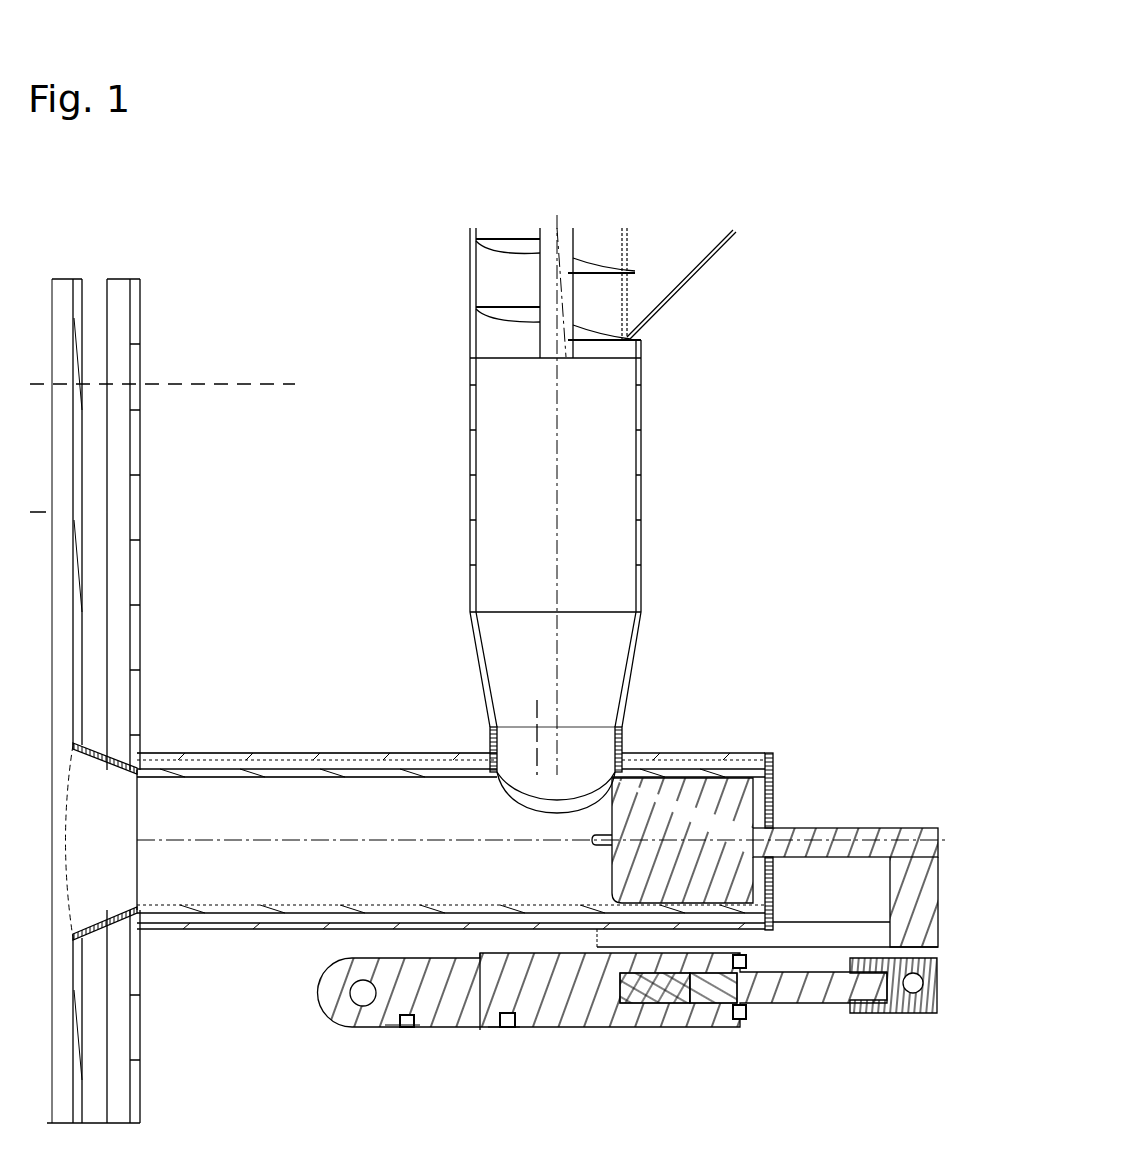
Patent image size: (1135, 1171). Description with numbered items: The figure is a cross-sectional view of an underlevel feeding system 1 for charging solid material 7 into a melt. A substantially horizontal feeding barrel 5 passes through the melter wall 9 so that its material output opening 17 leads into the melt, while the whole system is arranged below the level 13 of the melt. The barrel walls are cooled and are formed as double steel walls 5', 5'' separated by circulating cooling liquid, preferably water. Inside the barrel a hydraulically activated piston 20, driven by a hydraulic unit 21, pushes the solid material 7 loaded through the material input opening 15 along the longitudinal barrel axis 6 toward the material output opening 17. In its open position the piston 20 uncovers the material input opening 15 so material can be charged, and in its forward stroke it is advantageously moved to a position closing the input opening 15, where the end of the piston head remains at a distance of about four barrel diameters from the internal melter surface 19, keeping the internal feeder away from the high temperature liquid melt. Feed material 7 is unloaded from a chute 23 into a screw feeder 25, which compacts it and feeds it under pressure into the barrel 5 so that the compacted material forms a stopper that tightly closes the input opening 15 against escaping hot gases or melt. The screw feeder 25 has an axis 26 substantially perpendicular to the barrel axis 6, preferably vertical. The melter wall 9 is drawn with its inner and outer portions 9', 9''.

The feeding system 1 is at (718, 683).
The feeding barrel 5 is at (537, 806).
The steel wall 5' is at (317, 693).
The steel wall 5'' is at (317, 806).
The longitudinal barrel axis 6 is at (322, 842).
The solid material 7 is at (627, 337).
The melter wall 9 is at (85, 669).
The inner wall of vertical pipe 9' is at (74, 680).
The outer wall of vertical pipe 9'' is at (175, 678).
The level 13 is at (182, 384).
The material input opening 15 is at (538, 712).
The material output opening 17 is at (100, 873).
The internal melter surface 19 is at (74, 355).
The hydraulically activated piston 20 is at (705, 805).
The hydraulic unit 21 is at (538, 998).
The chute 23 is at (698, 272).
The screw feeder 25 is at (549, 270).
The axis 26 is at (555, 490).